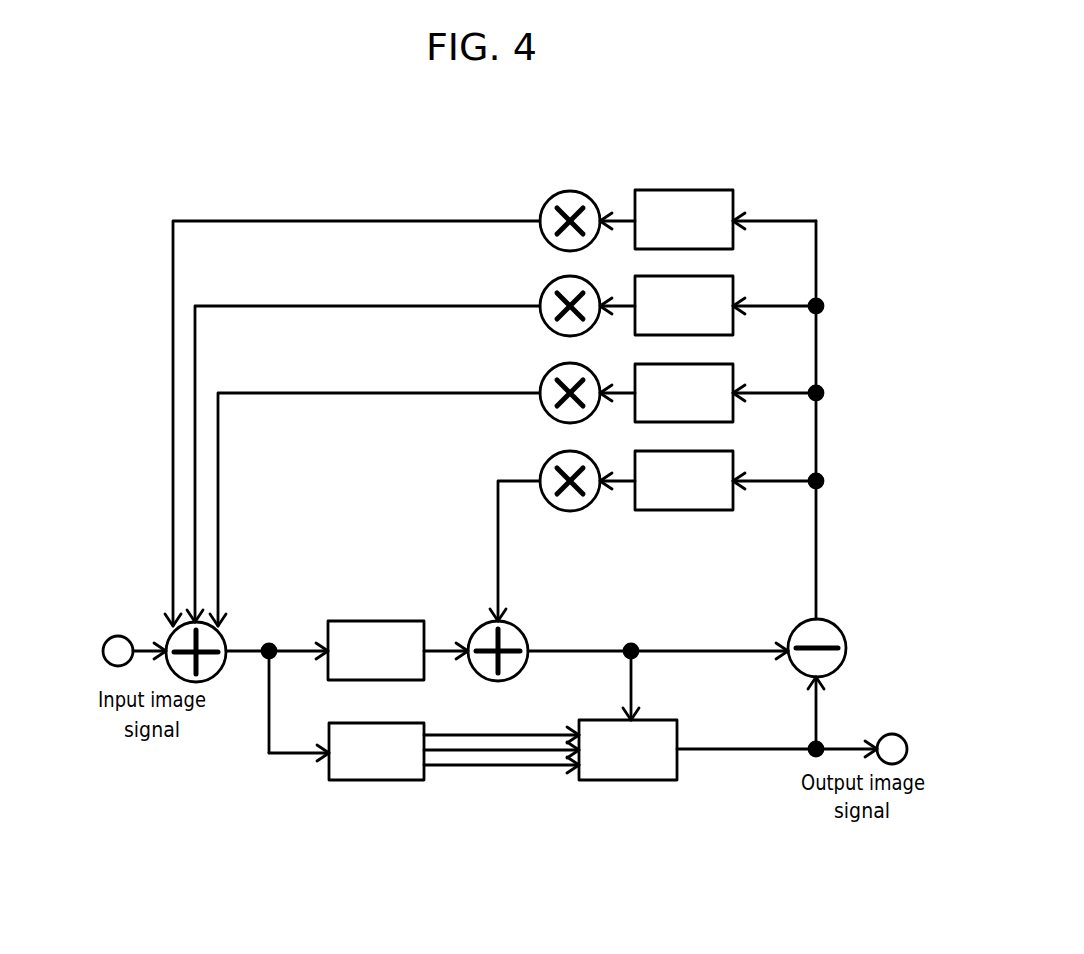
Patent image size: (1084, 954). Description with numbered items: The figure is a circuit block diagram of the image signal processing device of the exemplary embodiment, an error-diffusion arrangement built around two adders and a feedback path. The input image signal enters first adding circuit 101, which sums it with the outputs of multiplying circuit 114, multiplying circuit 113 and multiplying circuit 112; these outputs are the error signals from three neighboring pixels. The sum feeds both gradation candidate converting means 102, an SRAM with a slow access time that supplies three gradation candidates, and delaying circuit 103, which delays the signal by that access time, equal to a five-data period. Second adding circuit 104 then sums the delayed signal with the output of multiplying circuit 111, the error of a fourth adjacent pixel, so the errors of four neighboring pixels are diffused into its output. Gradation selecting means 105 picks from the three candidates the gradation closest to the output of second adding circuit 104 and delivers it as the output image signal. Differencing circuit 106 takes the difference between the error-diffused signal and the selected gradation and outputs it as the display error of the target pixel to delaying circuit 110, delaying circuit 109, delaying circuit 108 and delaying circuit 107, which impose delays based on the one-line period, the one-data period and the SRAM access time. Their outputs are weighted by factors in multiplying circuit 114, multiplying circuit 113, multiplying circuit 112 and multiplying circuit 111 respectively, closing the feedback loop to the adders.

The first adding circuit 101 is at (225, 637).
The gradation candidate converting means 102 is at (425, 720).
The delaying circuit 103 is at (360, 620).
The second adding circuit 104 is at (522, 627).
The gradation selecting means 105 is at (663, 718).
The differencing circuit 106 is at (830, 618).
The delaying circuit 107 is at (723, 448).
The delaying circuit 108 is at (727, 362).
The delaying circuit 109 is at (728, 275).
The delaying circuit 110 is at (720, 188).
The multiplying circuit 111 is at (546, 463).
The multiplying circuit 112 is at (546, 375).
The multiplying circuit 113 is at (544, 290).
The multiplying circuit 114 is at (552, 193).